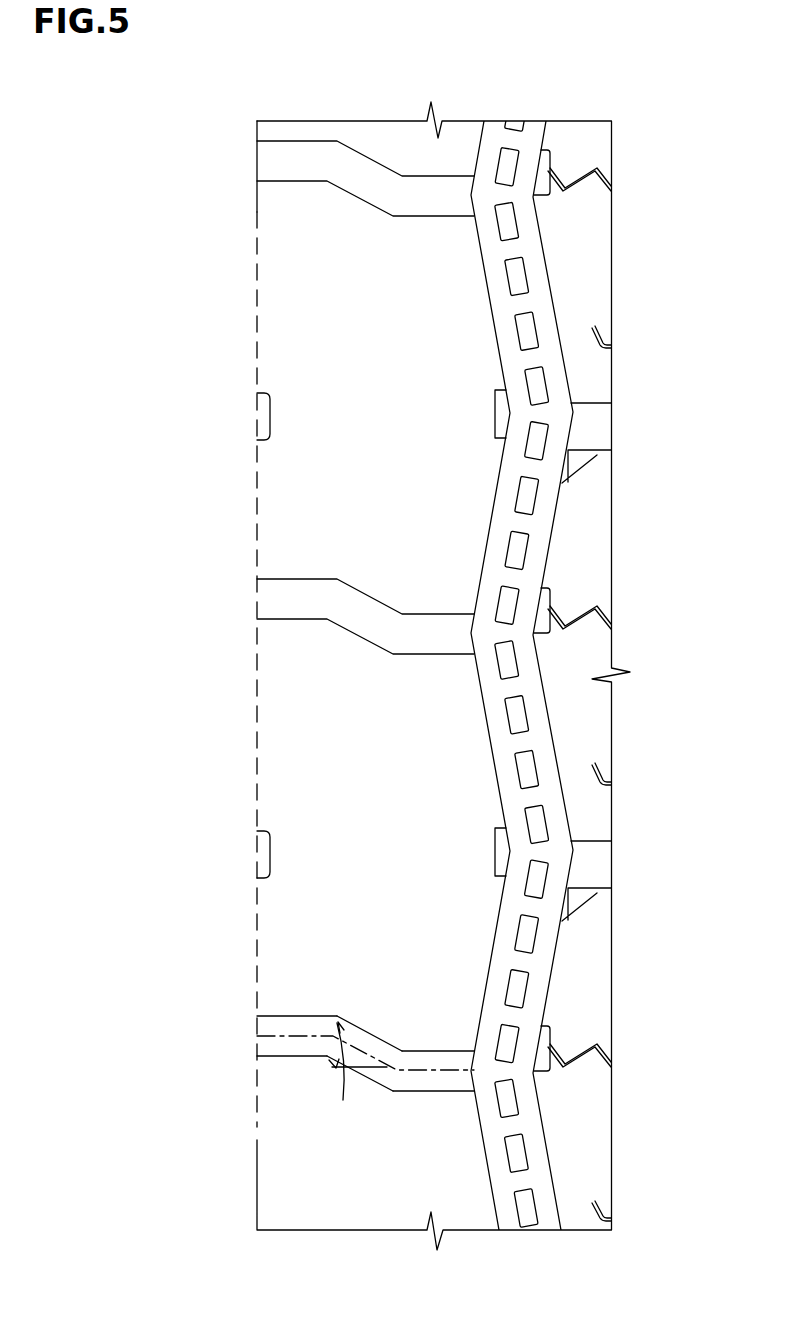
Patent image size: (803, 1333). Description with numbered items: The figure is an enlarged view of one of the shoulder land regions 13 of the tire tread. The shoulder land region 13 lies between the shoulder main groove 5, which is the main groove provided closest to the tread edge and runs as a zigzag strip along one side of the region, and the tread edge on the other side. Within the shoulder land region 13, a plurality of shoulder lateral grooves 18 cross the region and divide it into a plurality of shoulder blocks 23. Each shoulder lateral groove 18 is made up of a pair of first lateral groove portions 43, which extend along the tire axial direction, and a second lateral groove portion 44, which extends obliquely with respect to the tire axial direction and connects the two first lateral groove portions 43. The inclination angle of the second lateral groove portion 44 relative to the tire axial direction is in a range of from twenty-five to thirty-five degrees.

The shoulder main groove 5 is at (484, 150).
The shoulder land region 13 is at (334, 224).
The shoulder lateral groove 18 is at (441, 185).
The shoulder block 23 is at (403, 361).
The first lateral groove portion 43 is at (303, 1015).
The second lateral groove portion 44 is at (375, 1031).